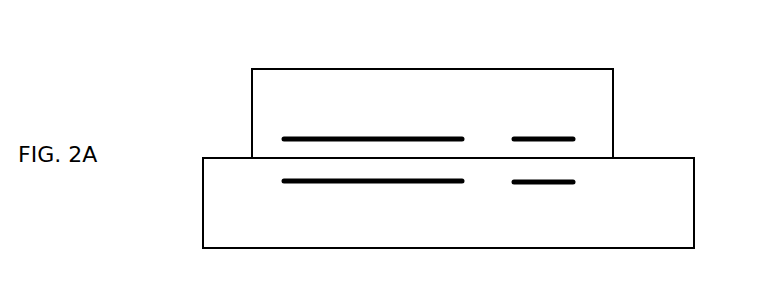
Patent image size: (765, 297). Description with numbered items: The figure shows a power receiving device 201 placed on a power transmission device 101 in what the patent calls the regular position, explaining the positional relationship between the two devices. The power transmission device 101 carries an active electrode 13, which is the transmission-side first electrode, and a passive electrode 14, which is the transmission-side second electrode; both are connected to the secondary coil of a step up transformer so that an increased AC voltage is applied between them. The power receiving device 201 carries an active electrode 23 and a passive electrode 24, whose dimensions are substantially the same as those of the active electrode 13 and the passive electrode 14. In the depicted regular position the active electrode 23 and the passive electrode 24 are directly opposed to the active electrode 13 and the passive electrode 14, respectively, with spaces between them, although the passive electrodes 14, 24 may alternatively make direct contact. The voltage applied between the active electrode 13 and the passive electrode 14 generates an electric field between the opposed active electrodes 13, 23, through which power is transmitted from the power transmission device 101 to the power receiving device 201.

The power transmission device 101 is at (222, 158).
The power receiving device 201 is at (278, 69).
The active electrode 13 is at (558, 185).
The passive electrode 14 is at (442, 185).
The active electrode 23 is at (557, 136).
The passive electrode 24 is at (437, 136).